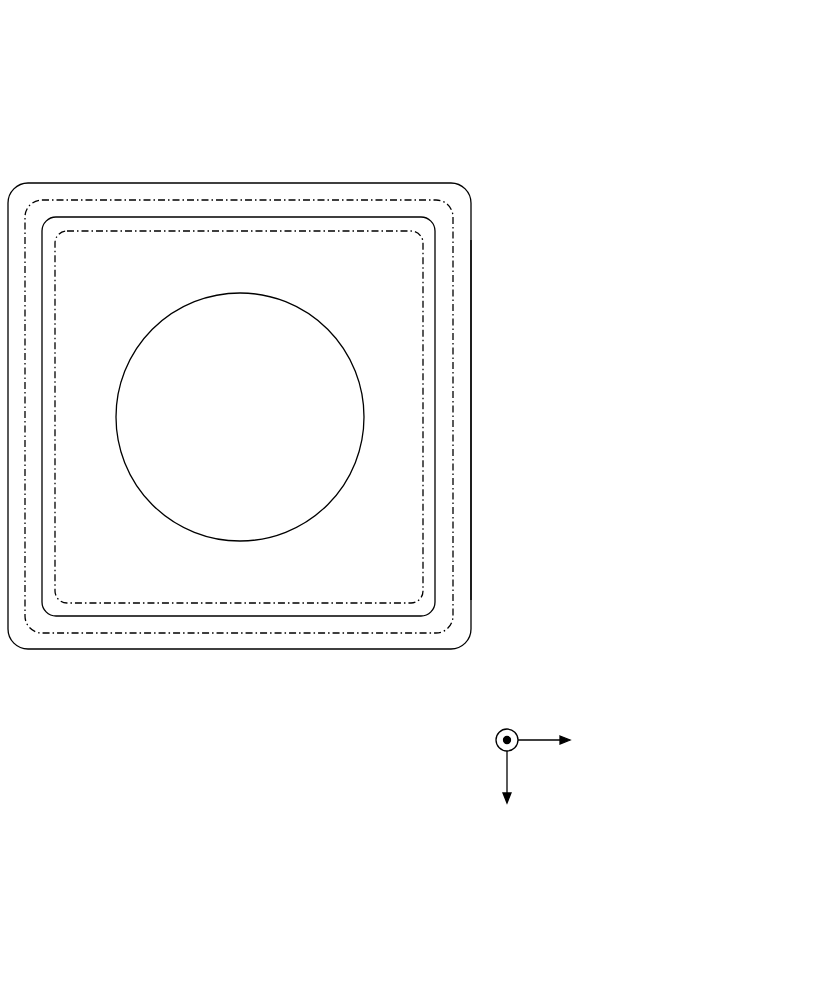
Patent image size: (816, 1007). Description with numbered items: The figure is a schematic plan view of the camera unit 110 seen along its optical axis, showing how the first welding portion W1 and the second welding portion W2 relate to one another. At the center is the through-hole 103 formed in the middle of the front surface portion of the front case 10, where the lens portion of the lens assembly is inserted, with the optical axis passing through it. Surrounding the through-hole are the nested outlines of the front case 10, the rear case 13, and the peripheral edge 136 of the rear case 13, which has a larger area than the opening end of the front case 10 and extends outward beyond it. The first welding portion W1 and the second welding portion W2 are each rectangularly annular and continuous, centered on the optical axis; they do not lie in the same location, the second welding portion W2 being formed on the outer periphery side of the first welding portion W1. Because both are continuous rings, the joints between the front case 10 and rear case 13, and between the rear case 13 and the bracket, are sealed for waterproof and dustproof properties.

The camera unit 110 is at (90, 90).
The peripheral edge 136 is at (423, 183).
The rear case 13 is at (467, 438).
The second welding portion W2 is at (453, 265).
The first welding portion W1 is at (423, 332).
The front case 10 is at (433, 522).
The through-hole 103 is at (242, 532).